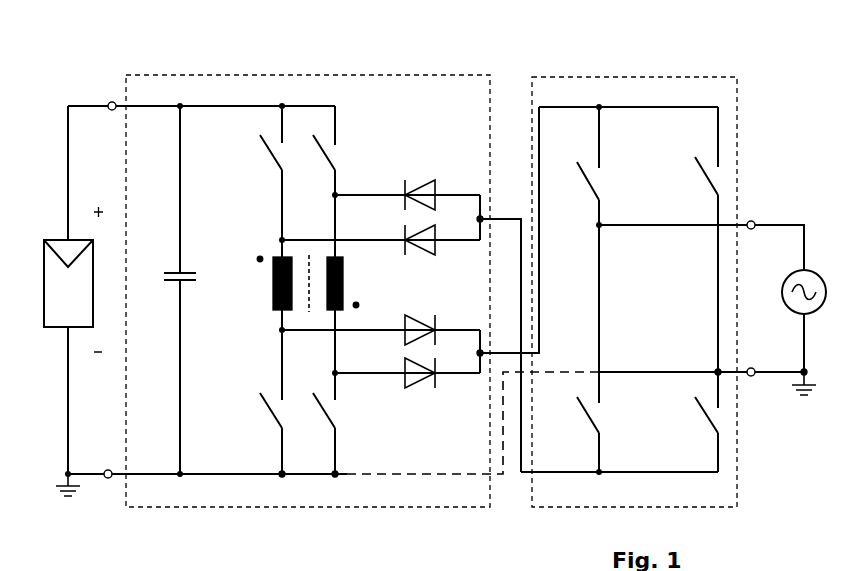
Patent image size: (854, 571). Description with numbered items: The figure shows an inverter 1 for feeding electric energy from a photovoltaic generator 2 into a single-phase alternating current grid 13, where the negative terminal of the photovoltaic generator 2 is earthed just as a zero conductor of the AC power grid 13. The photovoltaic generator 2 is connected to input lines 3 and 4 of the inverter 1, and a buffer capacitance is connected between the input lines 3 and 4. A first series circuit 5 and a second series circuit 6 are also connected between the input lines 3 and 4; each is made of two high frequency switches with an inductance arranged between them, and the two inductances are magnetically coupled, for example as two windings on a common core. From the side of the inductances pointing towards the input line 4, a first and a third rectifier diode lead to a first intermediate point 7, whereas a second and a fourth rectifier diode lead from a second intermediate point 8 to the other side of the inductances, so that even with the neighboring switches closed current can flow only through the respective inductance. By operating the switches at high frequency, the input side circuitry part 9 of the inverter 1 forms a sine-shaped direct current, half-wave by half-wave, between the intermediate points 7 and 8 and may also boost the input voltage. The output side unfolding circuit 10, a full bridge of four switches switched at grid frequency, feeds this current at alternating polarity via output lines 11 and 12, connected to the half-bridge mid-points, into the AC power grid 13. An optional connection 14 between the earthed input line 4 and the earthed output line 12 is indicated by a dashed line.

The inverter 1 is at (742, 90).
The photovoltaic generator 2 is at (52, 235).
The input line 3 is at (149, 104).
The input line 4 is at (149, 476).
The first series circuit 5 is at (279, 481).
The second series circuit 6 is at (337, 481).
The first intermediate point 7 is at (481, 357).
The second intermediate point 8 is at (481, 216).
The input side circuitry part 9 is at (435, 508).
The output side unfolding circuit 10 is at (718, 508).
The output line 11 is at (738, 222).
The output line 12 is at (737, 374).
The alternating current grid 13 is at (810, 268).
The connection 14 is at (450, 476).